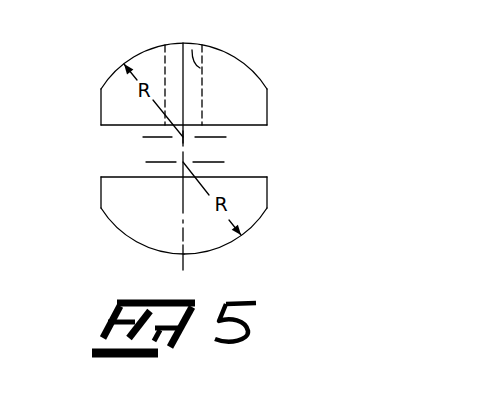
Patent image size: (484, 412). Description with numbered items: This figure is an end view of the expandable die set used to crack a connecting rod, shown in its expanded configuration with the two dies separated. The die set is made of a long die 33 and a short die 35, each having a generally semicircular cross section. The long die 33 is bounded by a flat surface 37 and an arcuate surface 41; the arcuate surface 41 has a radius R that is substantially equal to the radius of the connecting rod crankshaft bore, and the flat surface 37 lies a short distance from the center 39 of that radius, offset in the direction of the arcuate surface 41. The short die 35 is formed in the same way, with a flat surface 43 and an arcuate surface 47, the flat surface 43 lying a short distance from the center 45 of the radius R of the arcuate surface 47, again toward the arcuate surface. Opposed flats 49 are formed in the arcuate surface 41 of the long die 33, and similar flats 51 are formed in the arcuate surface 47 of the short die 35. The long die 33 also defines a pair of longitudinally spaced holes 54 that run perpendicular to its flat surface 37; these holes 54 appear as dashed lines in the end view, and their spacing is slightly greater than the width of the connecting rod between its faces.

The long die 33 is at (261, 71).
The short die 35 is at (126, 247).
The flat surface 37 is at (259, 127).
The center 39 is at (183, 138).
The arcuate surface 41 is at (183, 43).
The flat surface 43 is at (101, 177).
The center 45 is at (187, 160).
The arcuate surface 47 is at (227, 245).
The opposed flats 49 is at (101, 106).
The flats 51 is at (101, 191).
The longitudinally spaced holes 54 is at (202, 38).